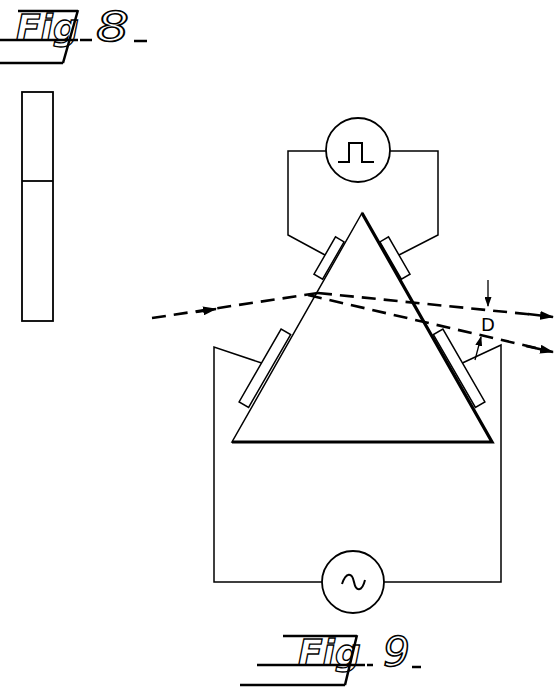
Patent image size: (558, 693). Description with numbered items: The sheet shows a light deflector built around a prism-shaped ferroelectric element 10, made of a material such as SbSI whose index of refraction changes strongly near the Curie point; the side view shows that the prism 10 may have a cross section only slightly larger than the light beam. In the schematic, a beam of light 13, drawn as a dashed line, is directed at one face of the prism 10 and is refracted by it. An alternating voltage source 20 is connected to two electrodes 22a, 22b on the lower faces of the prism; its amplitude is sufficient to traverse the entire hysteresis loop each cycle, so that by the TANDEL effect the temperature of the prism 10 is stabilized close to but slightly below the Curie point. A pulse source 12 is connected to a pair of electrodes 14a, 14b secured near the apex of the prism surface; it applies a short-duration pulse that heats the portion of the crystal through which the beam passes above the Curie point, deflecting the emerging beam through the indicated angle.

In FIG. 9, the ferroelectric element 10 is at (290, 445).
In FIG. 9, the pulse source 12 is at (381, 123).
In FIG. 9, the beam of light 13 is at (182, 312).
In FIG. 9, the electrode 14a is at (326, 250).
In FIG. 8, the electrode 14b is at (55, 160).
In FIG. 9, the electrode 14b is at (398, 250).
In FIG. 9, the alternating voltage source 20 is at (373, 556).
In FIG. 9, the electrode 22a is at (261, 365).
In FIG. 9, the electrode 22b is at (480, 396).